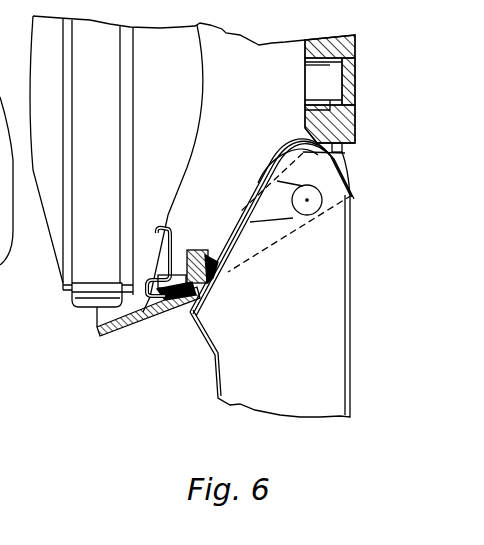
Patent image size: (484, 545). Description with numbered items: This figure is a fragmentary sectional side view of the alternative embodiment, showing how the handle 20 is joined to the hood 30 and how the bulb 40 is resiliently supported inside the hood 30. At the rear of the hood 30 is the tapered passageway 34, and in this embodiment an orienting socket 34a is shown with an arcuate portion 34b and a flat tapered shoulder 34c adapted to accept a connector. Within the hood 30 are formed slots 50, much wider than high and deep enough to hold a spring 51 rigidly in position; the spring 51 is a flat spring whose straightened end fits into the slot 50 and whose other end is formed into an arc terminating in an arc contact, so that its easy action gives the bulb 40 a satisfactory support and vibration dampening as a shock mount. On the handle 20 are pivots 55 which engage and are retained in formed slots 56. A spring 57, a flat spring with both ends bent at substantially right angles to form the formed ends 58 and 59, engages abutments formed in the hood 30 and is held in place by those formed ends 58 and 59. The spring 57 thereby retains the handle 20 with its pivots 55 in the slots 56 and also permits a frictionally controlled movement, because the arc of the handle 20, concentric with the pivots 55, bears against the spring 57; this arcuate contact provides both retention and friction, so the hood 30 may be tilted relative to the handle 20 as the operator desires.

The handle 20 is at (290, 278).
The hood 30 is at (355, 47).
The tapered passageway 34 is at (324, 93).
The orienting socket 34a is at (300, 93).
The arcuate portion 34b is at (320, 107).
The flat tapered shoulder 34c is at (322, 62).
The bulb 40 is at (173, 147).
The slot 50 is at (173, 280).
The spring 51 is at (147, 320).
The pivot 55 is at (307, 200).
The formed slot 56 is at (292, 221).
The spring 57 is at (238, 213).
The formed end 58 is at (213, 260).
The formed end 59 is at (343, 152).